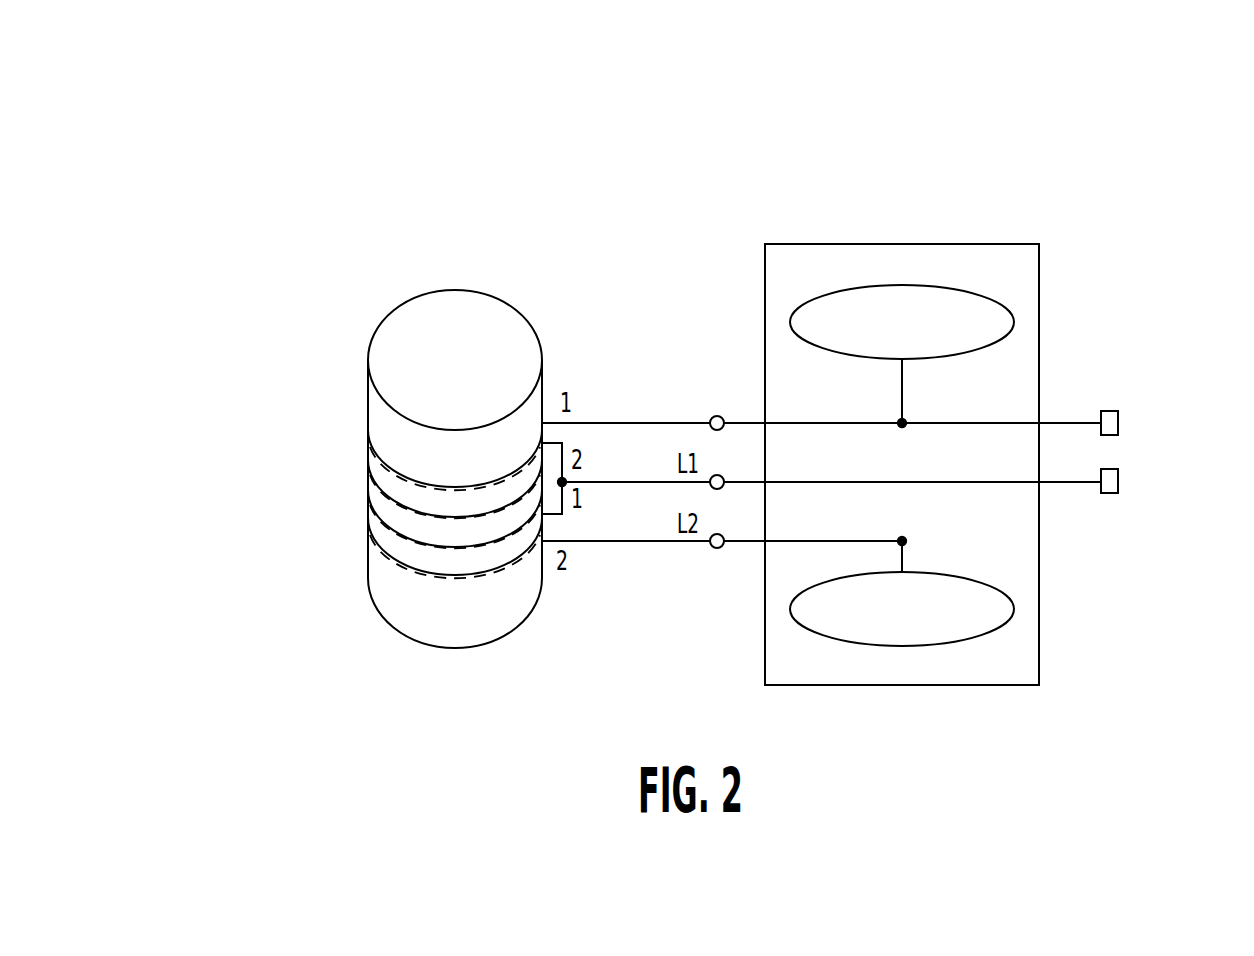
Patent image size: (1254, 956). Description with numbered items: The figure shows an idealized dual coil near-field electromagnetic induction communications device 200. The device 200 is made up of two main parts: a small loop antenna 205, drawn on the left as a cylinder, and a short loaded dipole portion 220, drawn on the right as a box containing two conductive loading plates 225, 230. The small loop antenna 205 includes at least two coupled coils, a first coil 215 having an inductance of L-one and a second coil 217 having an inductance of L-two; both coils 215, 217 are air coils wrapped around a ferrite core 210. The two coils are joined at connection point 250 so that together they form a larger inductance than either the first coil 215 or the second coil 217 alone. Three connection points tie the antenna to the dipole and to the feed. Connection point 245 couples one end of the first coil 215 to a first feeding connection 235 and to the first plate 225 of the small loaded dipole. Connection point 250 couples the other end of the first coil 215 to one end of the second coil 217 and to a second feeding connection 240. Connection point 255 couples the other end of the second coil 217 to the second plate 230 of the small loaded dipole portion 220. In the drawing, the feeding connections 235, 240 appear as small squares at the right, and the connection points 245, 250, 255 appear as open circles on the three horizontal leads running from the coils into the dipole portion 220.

The dual coil NFEMI communications device 200 is at (181, 158).
The small loop antenna 205 is at (367, 252).
The ferrite core 210 is at (383, 326).
The first coil 215 is at (400, 473).
The second coil 217 is at (412, 550).
The short loaded dipole portion 220 is at (965, 244).
The first conductive loading plate 225 is at (1013, 314).
The second conductive loading plate 230 is at (1013, 612).
The first feeding connection 235 is at (1118, 423).
The second feeding connection 240 is at (1118, 481).
The connection point 245 is at (716, 415).
The connection point 250 is at (722, 488).
The connection point 255 is at (717, 549).